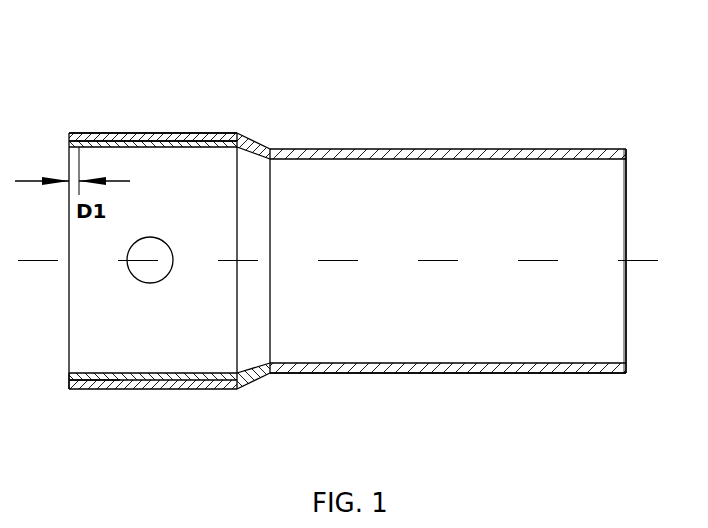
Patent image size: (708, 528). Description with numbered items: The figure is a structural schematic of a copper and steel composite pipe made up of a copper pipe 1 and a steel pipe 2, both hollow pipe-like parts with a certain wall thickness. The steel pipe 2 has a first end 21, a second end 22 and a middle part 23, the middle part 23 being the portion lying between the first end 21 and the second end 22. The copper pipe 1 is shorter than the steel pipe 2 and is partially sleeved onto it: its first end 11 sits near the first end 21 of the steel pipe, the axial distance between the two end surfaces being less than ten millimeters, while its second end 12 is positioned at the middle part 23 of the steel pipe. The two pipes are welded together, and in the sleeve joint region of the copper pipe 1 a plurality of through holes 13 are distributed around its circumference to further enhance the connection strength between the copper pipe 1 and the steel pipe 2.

The copper pipe 1 is at (153, 126).
The first end of the copper pipe 11 is at (92, 134).
The second end of the copper pipe 12 is at (236, 131).
The through holes 13 is at (150, 275).
The steel pipe 2 is at (358, 138).
The first end of the steel pipe 21 is at (75, 392).
The second end of the steel pipe 22 is at (617, 373).
The middle part of the steel pipe 23 is at (372, 373).